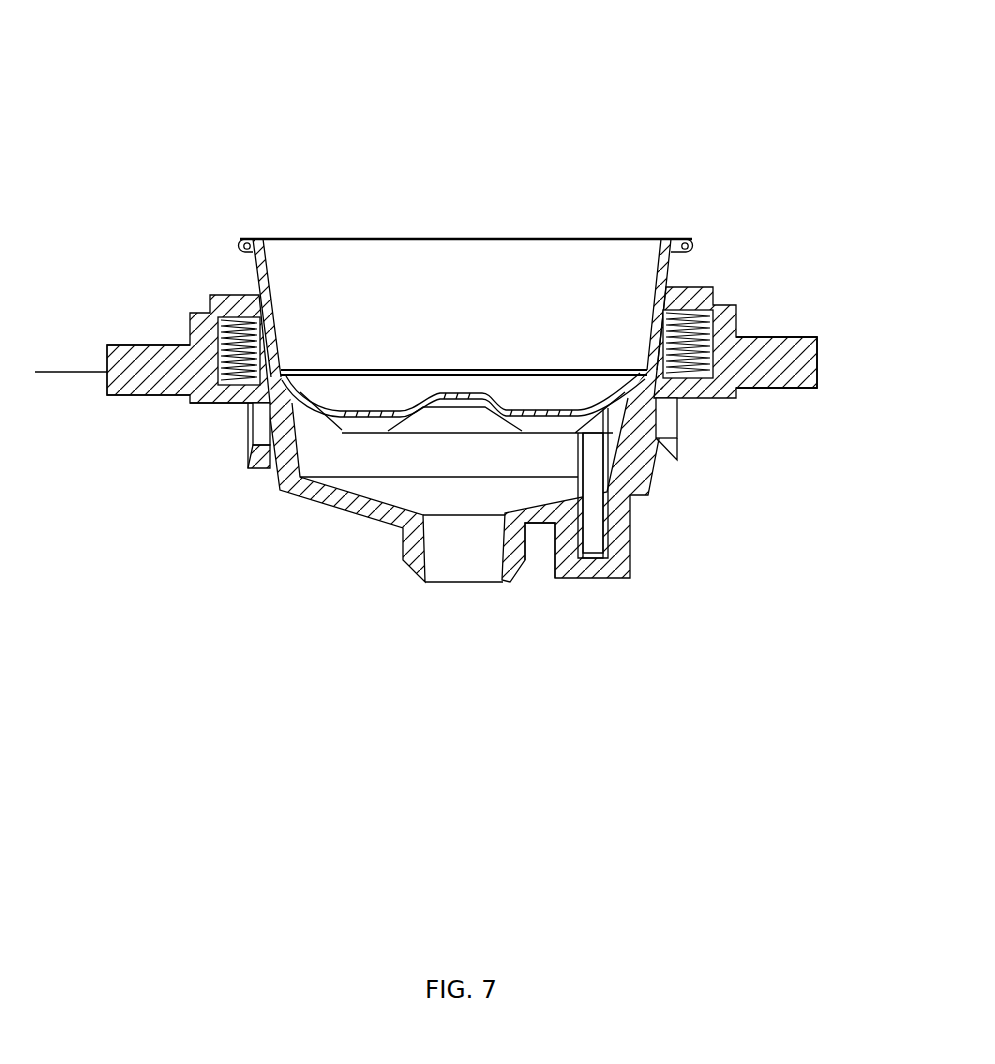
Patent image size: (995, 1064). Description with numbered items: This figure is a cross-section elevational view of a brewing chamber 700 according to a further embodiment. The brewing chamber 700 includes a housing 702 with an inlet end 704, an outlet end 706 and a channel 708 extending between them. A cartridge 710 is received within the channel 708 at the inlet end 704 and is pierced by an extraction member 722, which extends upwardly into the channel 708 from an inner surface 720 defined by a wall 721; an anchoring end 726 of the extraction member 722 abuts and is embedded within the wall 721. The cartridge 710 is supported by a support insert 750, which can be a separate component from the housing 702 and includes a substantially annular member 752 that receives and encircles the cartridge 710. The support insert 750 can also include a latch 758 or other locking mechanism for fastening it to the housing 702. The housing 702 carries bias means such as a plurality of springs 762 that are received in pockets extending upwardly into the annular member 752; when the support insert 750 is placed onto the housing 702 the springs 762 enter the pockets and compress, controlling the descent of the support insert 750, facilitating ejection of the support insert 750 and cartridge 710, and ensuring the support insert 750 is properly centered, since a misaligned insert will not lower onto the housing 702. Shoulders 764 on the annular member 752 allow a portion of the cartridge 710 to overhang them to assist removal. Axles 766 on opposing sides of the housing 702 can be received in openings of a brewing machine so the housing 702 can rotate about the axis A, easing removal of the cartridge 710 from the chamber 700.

The brewing chamber 700 is at (157, 100).
The housing 702 is at (212, 420).
The inlet end 704 is at (190, 312).
The outlet end 706 is at (425, 583).
The channel 708 is at (362, 457).
The cartridge 710 is at (400, 238).
The inner surface 720 is at (365, 482).
The wall 721 is at (537, 520).
The extraction member 722 is at (643, 482).
The anchoring end 726 is at (610, 555).
The support insert 750 is at (213, 317).
The annular member 752 is at (716, 300).
The latch 758 is at (250, 462).
The springs 762 is at (739, 336).
The shoulders 764 is at (700, 287).
The axles 766 is at (107, 393).